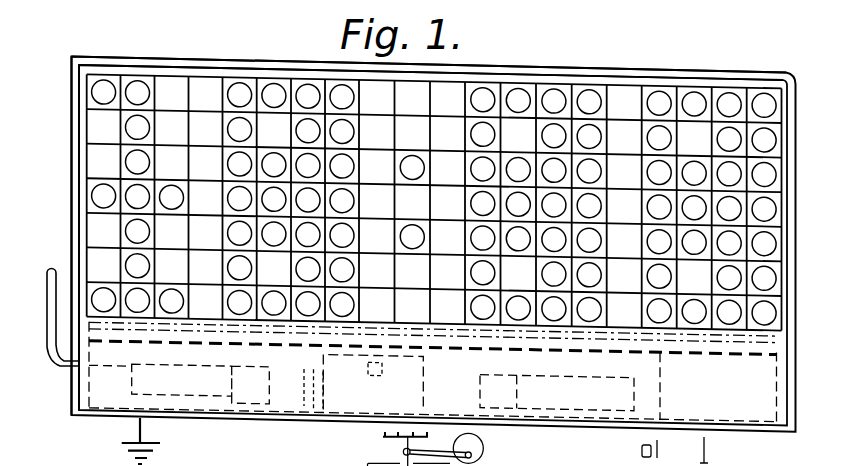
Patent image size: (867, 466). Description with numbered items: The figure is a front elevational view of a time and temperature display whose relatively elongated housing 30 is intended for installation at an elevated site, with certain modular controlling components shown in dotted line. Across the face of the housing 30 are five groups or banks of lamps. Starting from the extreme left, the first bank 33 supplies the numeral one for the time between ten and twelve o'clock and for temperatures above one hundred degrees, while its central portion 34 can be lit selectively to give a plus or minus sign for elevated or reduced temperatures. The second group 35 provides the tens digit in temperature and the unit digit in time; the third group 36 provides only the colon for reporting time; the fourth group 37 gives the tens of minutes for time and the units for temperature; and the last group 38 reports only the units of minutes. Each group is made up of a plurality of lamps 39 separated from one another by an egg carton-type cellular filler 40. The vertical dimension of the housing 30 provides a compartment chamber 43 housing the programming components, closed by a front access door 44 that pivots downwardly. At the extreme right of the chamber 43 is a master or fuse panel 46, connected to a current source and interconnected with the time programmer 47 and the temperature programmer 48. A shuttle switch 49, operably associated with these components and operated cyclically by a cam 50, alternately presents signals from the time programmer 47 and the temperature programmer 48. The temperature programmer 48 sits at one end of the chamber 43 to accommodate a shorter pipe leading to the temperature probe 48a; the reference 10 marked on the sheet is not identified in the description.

The housing 30 is at (795, 201).
The first bank of lamps 33 is at (162, 20).
The central portion of first group 34 is at (80, 200).
The second group of lamps 35 is at (278, 51).
The third group of lamps 36 is at (442, 69).
The fourth group of lights 37 is at (580, 32).
The last group of lamps 38 is at (750, 48).
The lamps 39 is at (235, 302).
The cellular filler 40 is at (763, 142).
The compartment chamber 43 is at (763, 368).
The front access door 44 is at (107, 387).
The master panel 46 is at (747, 412).
The time programmer 47 is at (578, 365).
The temperature programmer 48 is at (204, 393).
The temperature probe 48a is at (40, 287).
The shuttle switch 49 is at (423, 369).
The cam 50 is at (487, 448).
The device 10 is at (675, 450).